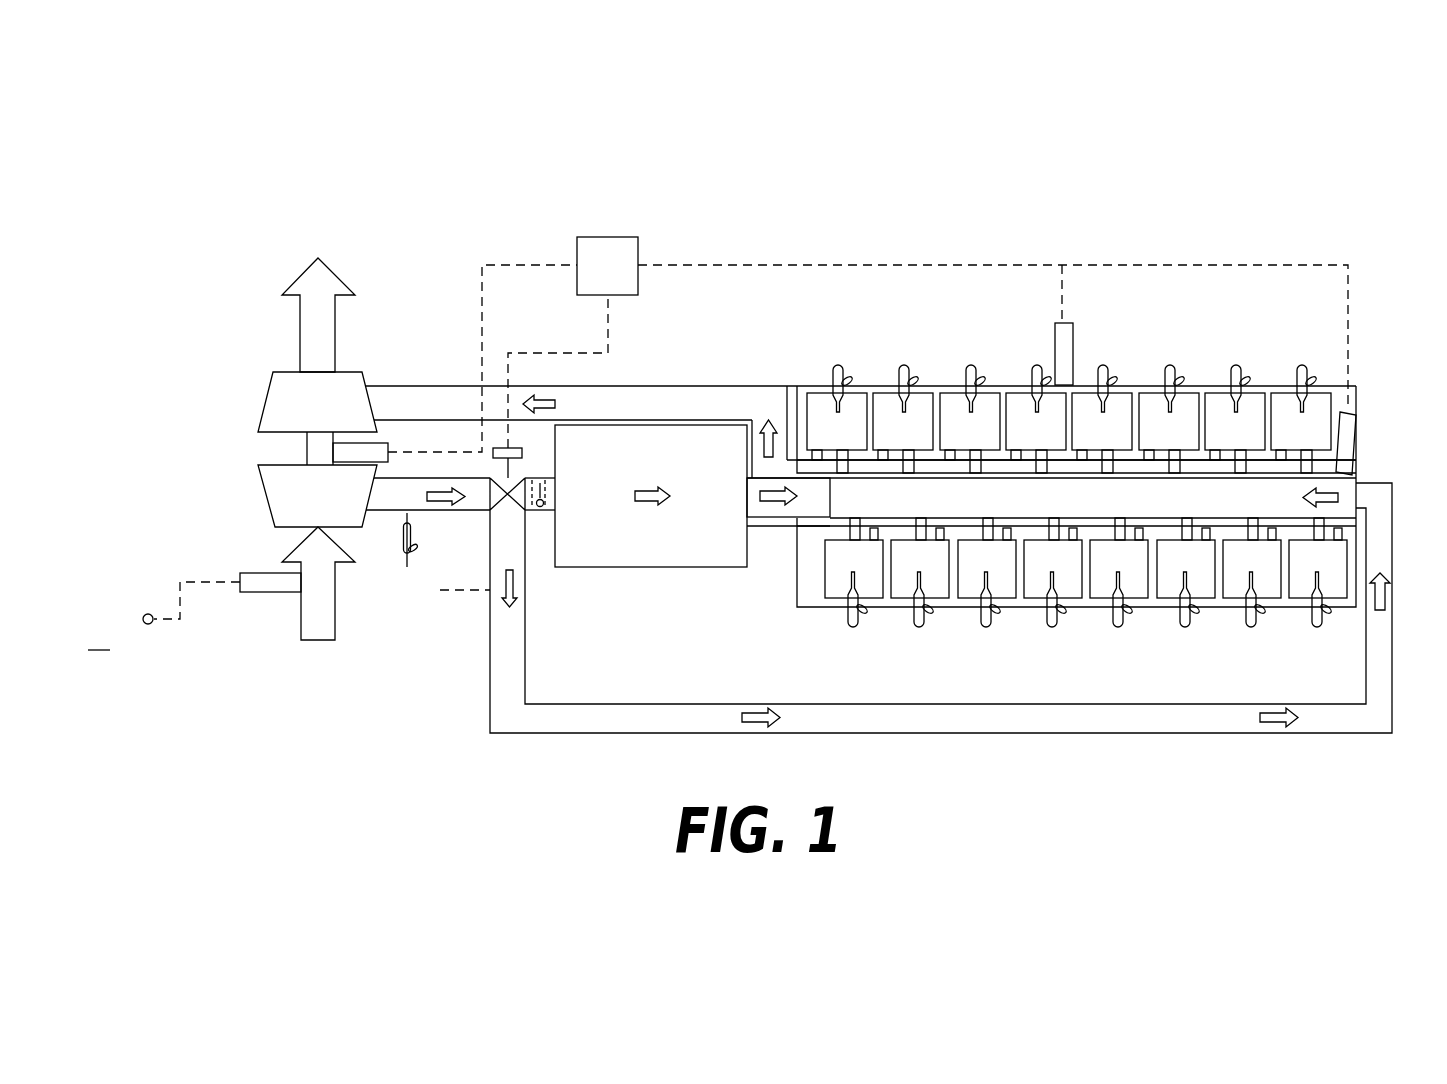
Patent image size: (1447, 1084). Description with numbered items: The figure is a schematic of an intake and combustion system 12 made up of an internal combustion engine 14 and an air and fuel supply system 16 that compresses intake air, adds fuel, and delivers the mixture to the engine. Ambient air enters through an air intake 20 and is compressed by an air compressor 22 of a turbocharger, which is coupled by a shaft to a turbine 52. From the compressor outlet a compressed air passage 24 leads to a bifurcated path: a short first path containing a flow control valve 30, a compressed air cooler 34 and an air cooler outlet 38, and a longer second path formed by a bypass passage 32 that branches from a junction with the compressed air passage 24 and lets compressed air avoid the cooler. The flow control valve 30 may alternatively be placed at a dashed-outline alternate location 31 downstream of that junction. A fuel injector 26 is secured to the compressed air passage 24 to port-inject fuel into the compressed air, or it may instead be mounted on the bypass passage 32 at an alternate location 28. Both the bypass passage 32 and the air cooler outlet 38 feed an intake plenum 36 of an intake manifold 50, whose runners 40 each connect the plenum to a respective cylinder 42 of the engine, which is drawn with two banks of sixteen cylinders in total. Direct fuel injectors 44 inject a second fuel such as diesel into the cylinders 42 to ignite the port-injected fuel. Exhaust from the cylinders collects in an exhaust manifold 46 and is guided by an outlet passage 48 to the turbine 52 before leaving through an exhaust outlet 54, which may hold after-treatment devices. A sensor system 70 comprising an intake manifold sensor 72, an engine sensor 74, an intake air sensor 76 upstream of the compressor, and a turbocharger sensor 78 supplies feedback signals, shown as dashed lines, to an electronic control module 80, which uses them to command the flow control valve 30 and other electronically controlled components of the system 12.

The intake and combustion system 12 is at (170, 232).
The internal combustion engine 14 is at (812, 593).
The air and fuel supply system 16 is at (133, 486).
The air intake 20 is at (322, 633).
The air compressor 22 is at (282, 512).
The compressed air passage 24 is at (393, 505).
The fuel injector 26 is at (407, 570).
The alternate location 28 is at (443, 595).
The flow control valve 30 is at (520, 490).
The alternate location 31 is at (547, 495).
The bypass passage 32 is at (678, 712).
The compressed air cooler 34 is at (580, 560).
The intake plenum 36 is at (1160, 510).
The air cooler outlet 38 is at (817, 505).
The runners 40 is at (845, 457).
The cylinders 42 is at (820, 415).
The direct fuel injectors 44 is at (842, 367).
The exhaust manifold 46 is at (1003, 468).
The outlet passage 48 is at (758, 393).
The intake manifold 50 is at (1368, 471).
The turbine 52 is at (285, 397).
The exhaust outlet 54 is at (310, 335).
The sensor system 70 is at (1322, 232).
The intake manifold sensor 72 is at (1352, 428).
The engine sensor 74 is at (1068, 352).
The intake air sensor 76 is at (252, 583).
The turbocharger sensor 78 is at (343, 452).
The electronic control module (ECM) 80 is at (595, 248).